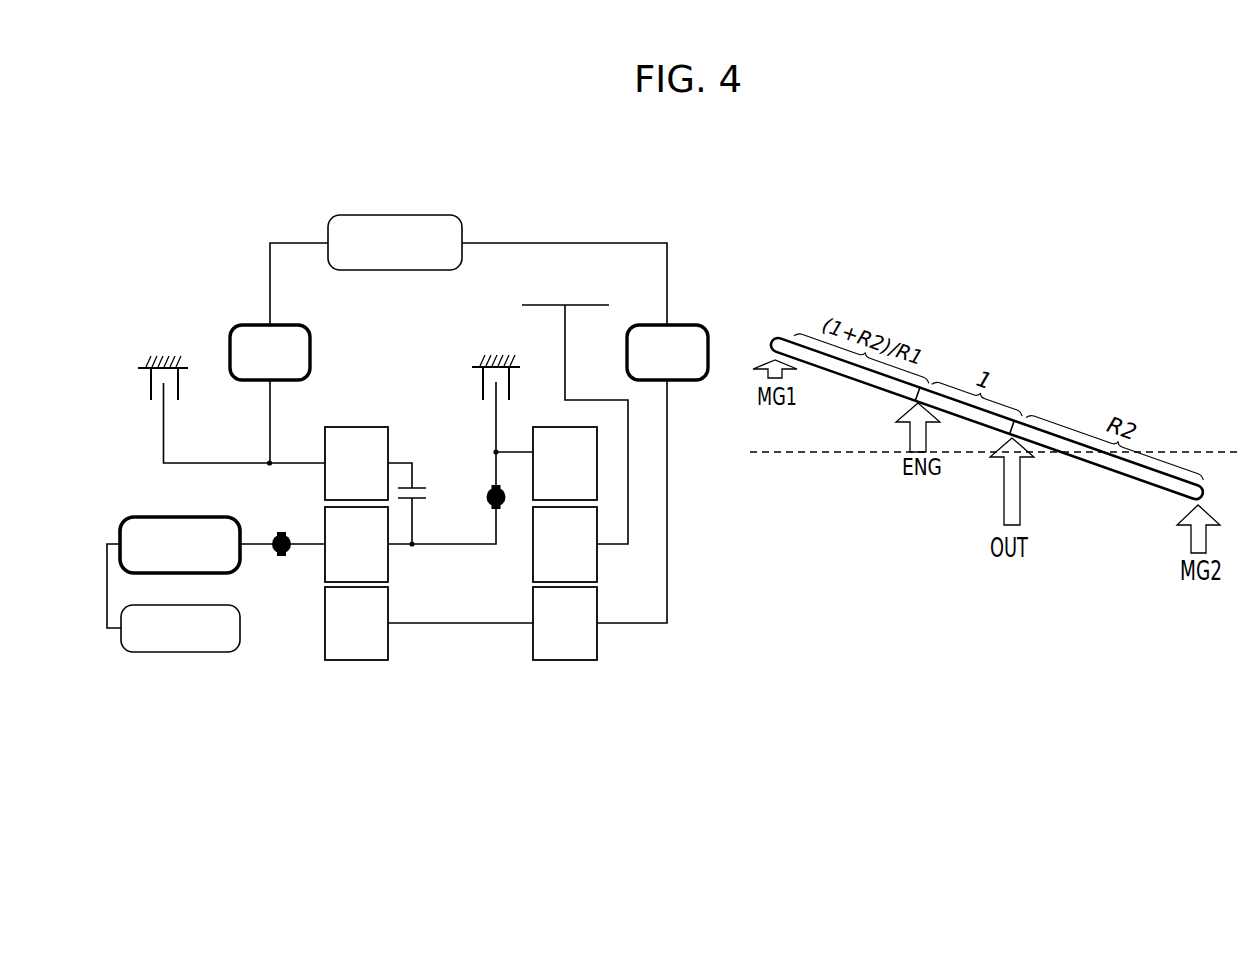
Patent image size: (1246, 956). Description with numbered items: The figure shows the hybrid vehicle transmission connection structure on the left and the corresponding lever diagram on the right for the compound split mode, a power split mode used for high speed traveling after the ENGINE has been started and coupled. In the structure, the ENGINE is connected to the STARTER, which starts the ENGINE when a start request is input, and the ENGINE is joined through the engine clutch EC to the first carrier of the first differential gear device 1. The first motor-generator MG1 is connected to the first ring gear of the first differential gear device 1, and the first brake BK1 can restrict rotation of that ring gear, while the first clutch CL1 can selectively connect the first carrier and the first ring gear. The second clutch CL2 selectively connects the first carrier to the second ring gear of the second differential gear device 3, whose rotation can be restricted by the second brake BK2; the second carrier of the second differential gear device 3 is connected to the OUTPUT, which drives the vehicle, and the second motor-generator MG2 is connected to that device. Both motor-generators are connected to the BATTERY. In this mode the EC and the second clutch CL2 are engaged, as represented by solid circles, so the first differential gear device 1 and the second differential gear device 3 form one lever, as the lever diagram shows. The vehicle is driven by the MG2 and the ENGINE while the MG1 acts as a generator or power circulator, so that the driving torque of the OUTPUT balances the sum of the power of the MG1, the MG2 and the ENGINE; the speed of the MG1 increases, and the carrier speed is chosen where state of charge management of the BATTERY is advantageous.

The first differential gear device 1 is at (333, 672).
The second differential gear device 3 is at (541, 672).
The first motor-generator MG1 is at (270, 352).
The second motor-generator MG2 is at (667, 352).
The first brake BK1 is at (231, 392).
The second brake BK2 is at (496, 386).
The first clutch CL1 is at (423, 503).
The second clutch CL2 is at (460, 496).
The engine clutch EC is at (285, 560).
The battery BATTERY is at (395, 242).
The engine ENGINE is at (180, 545).
The starter STARTER is at (180, 628).
The output OUTPUT is at (575, 410).